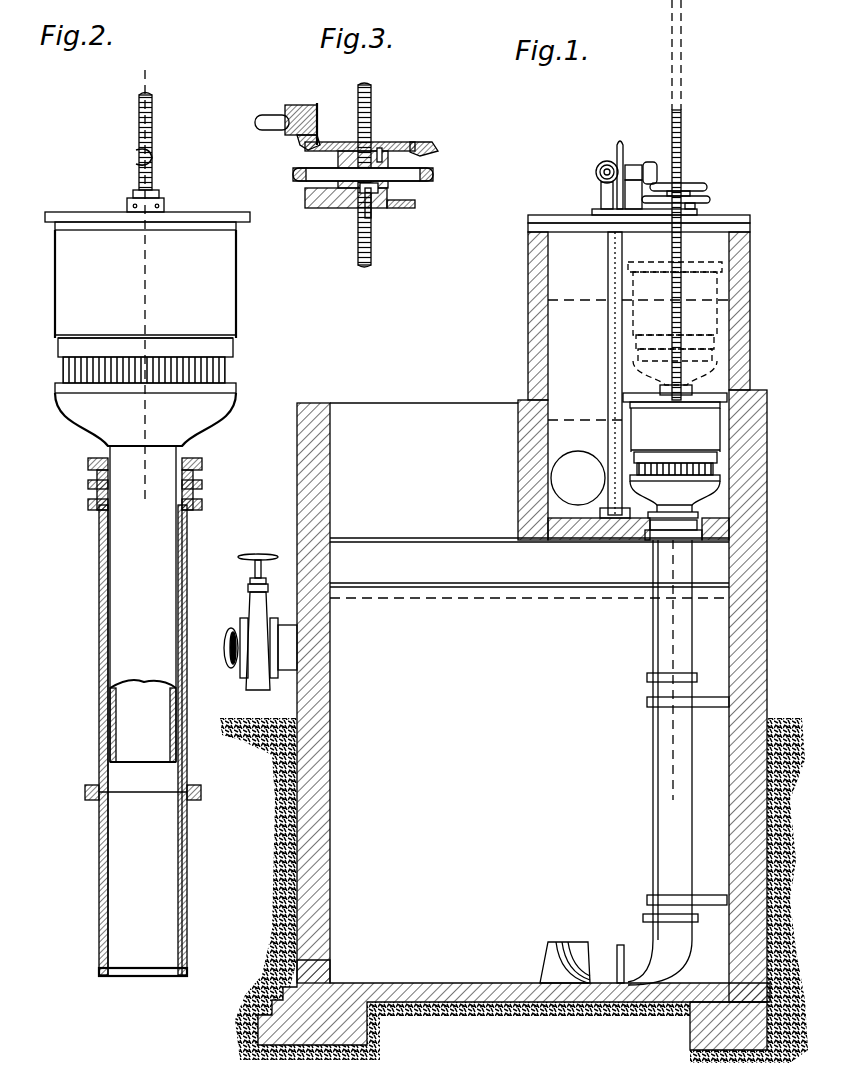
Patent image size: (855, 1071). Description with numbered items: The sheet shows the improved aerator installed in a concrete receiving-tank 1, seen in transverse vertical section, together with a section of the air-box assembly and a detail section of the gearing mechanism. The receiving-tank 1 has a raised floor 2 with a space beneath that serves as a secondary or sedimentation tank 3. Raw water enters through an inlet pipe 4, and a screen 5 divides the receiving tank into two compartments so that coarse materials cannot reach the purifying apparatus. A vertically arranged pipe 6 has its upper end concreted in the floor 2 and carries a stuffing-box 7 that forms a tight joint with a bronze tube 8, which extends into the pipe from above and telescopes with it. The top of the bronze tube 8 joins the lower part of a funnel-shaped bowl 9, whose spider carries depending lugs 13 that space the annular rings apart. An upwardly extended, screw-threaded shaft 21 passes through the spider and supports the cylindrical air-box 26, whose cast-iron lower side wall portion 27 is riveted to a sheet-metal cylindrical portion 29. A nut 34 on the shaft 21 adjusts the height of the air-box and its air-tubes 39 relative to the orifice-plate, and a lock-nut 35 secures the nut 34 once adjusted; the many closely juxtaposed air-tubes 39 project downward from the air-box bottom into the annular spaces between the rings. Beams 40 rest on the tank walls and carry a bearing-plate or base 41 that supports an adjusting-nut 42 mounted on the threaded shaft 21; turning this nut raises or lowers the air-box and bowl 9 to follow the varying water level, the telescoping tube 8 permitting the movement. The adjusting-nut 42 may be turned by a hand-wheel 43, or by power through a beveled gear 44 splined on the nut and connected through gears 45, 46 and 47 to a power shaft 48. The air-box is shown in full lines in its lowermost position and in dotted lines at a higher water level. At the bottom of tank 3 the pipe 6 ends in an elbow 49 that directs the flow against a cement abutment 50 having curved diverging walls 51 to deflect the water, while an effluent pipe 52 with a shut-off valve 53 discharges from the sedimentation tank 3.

In FIG. 1, the receiving-tank 1 is at (652, 617).
In FIG. 1, the raised floor 2 is at (584, 532).
In FIG. 1, the secondary or sedimentation tank 3 is at (514, 726).
In FIG. 1, the inlet pipe 4 is at (578, 470).
In FIG. 1, the screen 5 is at (608, 268).
In FIG. 2, the vertically arranged pipe 6 is at (100, 574).
In FIG. 1, the vertically arranged pipe 6 is at (685, 598).
In FIG. 2, the stuffing-box 7 is at (198, 472).
In FIG. 1, the stuffing-box 7 is at (700, 515).
In FIG. 2, the bronze tube 8 is at (130, 532).
In FIG. 1, the bronze tube 8 is at (712, 498).
In FIG. 2, the funnel-shaped bowl 9 is at (90, 414).
In FIG. 1, the funnel-shaped bowl 9 is at (675, 498).
In FIG. 2, the depending lugs 13 is at (143, 604).
In FIG. 2, the shaft 21 is at (139, 125).
In FIG. 3, the shaft 21 is at (372, 108).
In FIG. 1, the shaft 21 is at (682, 124).
In FIG. 2, the air-box 26 is at (164, 284).
In FIG. 2, the lower side wall portion 27 is at (233, 348).
In FIG. 1, the lower side wall portion 27 is at (712, 457).
In FIG. 2, the sheet-metal cylindrical portion 29 is at (65, 272).
In FIG. 1, the sheet-metal cylindrical portion 29 is at (752, 322).
In FIG. 2, the nut 34 is at (133, 205).
In FIG. 2, the lock-nut 35 is at (158, 192).
In FIG. 1, the lock-nut 35 is at (692, 390).
In FIG. 2, the air-tubes 39 is at (70, 368).
In FIG. 1, the air-tubes 39 is at (713, 470).
In FIG. 1, the beams 40 is at (742, 224).
In FIG. 3, the bearing-plate or base 41 is at (392, 196).
In FIG. 1, the bearing-plate or base 41 is at (695, 207).
In FIG. 3, the adjusting-nut 42 is at (390, 163).
In FIG. 1, the adjusting-nut 42 is at (687, 190).
In FIG. 3, the hand-wheel 43 is at (434, 175).
In FIG. 1, the hand-wheel 43 is at (710, 199).
In FIG. 3, the beveled gear 44 is at (420, 140).
In FIG. 1, the beveled gear 44 is at (700, 183).
In FIG. 3, the gear 45 is at (302, 100).
In FIG. 1, the gear 45 is at (652, 162).
In FIG. 1, the gear 46 is at (622, 140).
In FIG. 1, the gear 47 is at (607, 160).
In FIG. 1, the shaft 48 is at (596, 170).
In FIG. 1, the elbow 49 is at (670, 956).
In FIG. 1, the abutment 50 is at (556, 942).
In FIG. 1, the curved diverging walls 51 is at (585, 945).
In FIG. 1, the effluent pipe 52 is at (230, 646).
In FIG. 1, the shut-off valve 53 is at (245, 650).